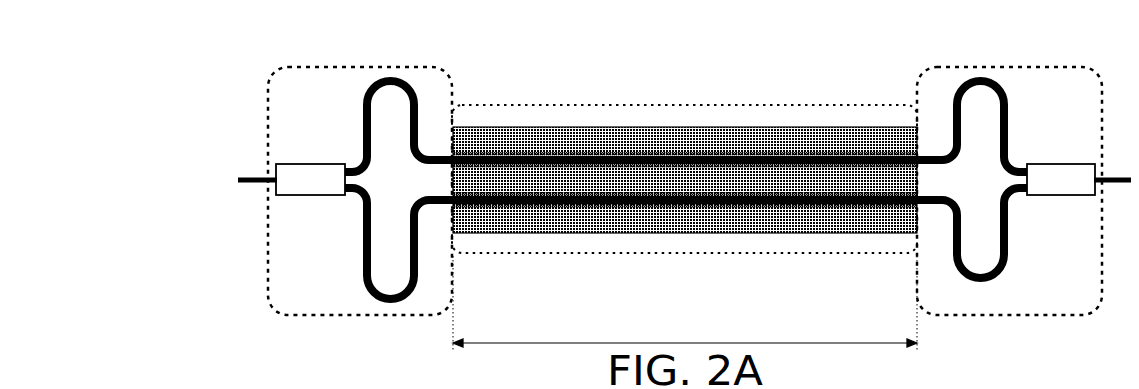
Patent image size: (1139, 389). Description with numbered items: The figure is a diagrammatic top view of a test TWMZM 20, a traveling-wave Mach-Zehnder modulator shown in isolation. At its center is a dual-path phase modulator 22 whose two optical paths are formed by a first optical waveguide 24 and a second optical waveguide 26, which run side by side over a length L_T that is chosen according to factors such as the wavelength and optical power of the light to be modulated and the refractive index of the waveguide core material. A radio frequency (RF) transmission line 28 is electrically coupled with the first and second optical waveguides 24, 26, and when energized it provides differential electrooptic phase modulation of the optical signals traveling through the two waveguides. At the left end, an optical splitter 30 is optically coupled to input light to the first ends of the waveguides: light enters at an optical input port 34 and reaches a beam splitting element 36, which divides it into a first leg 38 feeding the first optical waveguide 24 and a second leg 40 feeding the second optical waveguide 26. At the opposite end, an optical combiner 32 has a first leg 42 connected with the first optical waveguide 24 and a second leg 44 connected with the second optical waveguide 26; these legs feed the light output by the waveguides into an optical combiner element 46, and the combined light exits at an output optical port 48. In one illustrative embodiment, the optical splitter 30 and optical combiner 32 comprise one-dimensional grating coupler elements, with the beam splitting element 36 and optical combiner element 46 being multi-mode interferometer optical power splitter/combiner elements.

The test TWMZM 20 is at (686, 80).
The dual-path phase modulator 22 is at (750, 103).
The first optical waveguide 24 is at (831, 155).
The second optical waveguide 26 is at (830, 235).
The radio frequency (RF) transmission line 28 is at (523, 133).
The optical splitter 30 is at (340, 65).
The optical combiner 32 is at (1033, 66).
The optical input port 34 is at (251, 175).
The beam splitting element 36 is at (311, 162).
The first leg 38 is at (390, 75).
The second leg 40 is at (389, 305).
The first leg 42 is at (981, 75).
The second leg 44 is at (980, 285).
The optical combiner element 46 is at (1062, 162).
The output optical port 48 is at (1118, 175).